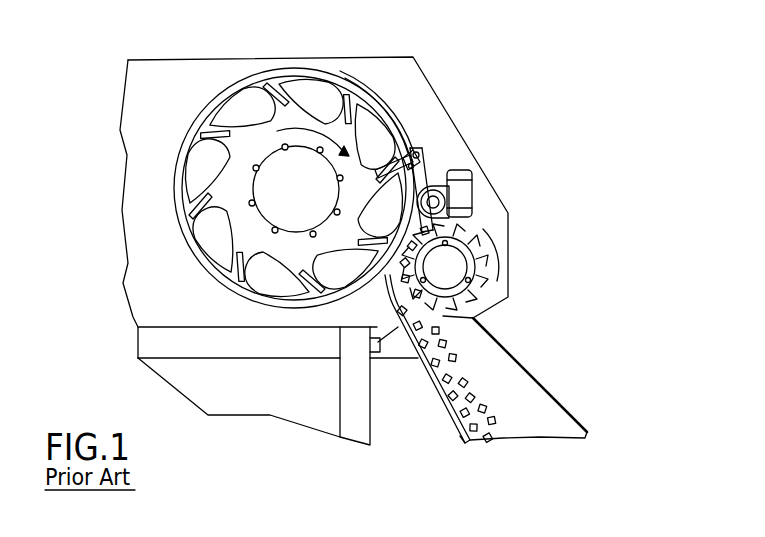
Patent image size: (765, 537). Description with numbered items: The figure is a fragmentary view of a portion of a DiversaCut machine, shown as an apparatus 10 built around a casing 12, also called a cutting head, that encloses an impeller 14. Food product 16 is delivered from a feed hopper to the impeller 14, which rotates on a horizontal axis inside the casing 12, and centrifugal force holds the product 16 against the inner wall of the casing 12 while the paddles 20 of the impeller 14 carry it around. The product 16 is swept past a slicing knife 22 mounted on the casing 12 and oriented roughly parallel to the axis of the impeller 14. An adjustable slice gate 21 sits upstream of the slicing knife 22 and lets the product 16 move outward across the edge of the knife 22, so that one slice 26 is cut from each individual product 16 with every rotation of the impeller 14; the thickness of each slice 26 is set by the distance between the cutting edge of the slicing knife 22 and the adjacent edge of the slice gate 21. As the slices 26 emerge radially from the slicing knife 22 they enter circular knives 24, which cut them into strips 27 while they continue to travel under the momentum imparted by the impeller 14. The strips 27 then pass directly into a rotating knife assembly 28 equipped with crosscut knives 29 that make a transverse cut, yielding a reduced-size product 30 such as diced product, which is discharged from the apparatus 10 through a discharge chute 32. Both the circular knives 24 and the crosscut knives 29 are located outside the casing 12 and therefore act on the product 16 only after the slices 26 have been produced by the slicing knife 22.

The apparatus 10 is at (578, 182).
The casing 12 is at (197, 130).
The impeller 14 is at (247, 233).
The food product 16 is at (370, 130).
The paddles 20 is at (217, 147).
The adjustable slice gate 21 is at (412, 132).
The slicing knife 22 is at (372, 200).
The circular knives 24 is at (448, 197).
The slice 26 is at (456, 170).
The strips 27 is at (425, 223).
The rotating knife assembly 28 is at (453, 268).
The crosscut knives 29 is at (455, 307).
The reduced-size product 30 is at (473, 362).
The discharge chute 32 is at (537, 383).